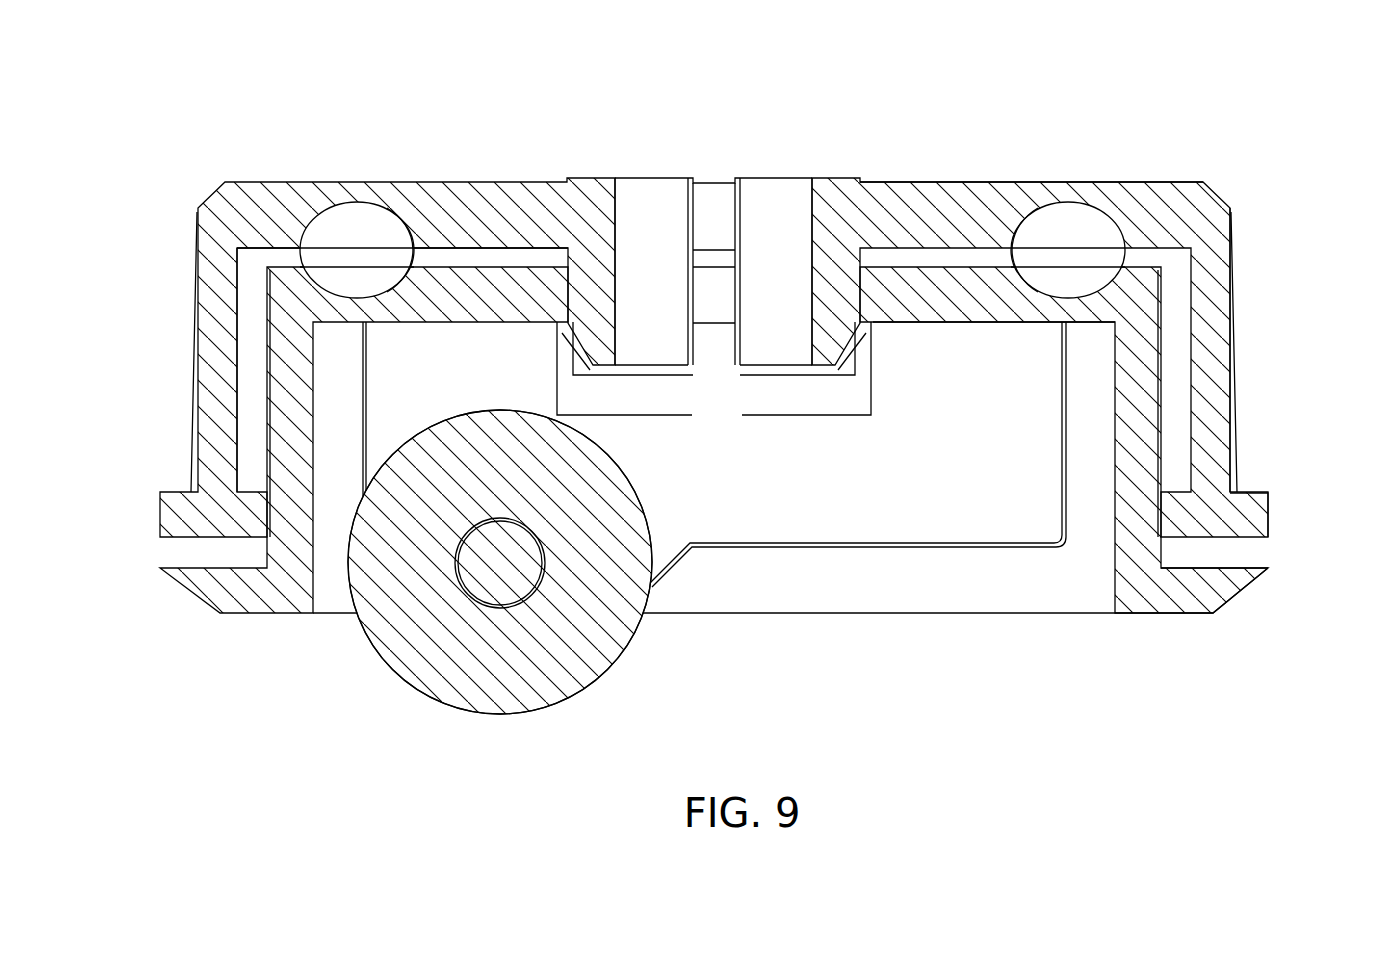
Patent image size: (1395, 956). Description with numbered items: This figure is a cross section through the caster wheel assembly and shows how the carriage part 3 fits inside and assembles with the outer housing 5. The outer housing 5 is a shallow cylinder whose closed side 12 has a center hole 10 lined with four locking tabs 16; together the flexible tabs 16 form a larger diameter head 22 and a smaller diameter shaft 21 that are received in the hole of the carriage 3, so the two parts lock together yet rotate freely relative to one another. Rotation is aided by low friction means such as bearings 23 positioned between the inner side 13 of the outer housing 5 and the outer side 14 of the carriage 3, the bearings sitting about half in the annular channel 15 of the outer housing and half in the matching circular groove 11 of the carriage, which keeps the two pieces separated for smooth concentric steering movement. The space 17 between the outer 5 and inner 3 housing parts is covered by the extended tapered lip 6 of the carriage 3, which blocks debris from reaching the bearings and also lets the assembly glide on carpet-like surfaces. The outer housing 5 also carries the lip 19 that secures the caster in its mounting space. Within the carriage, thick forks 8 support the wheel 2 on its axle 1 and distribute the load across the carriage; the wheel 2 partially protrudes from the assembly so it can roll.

The shaft 1 is at (508, 570).
The wheel 2 is at (460, 643).
The carriage piece 3 is at (957, 287).
The outer housing 5 is at (930, 213).
The extended lip 6 is at (1207, 590).
The forks 8 is at (908, 443).
The center hole 10 is at (715, 338).
The circular groove 11 is at (1160, 285).
The other side of outer housing 12 is at (282, 182).
The inner side of outer housing 13 is at (268, 247).
The outer side of carriage 14 is at (285, 268).
The annular channel 15 is at (1073, 215).
The locking tabs 16 is at (650, 292).
The space 17 is at (1258, 552).
The lip of outer housing 19 is at (1245, 512).
The shaft 21 is at (714, 362).
The head 22 is at (714, 382).
The ball 23 is at (950, 258).